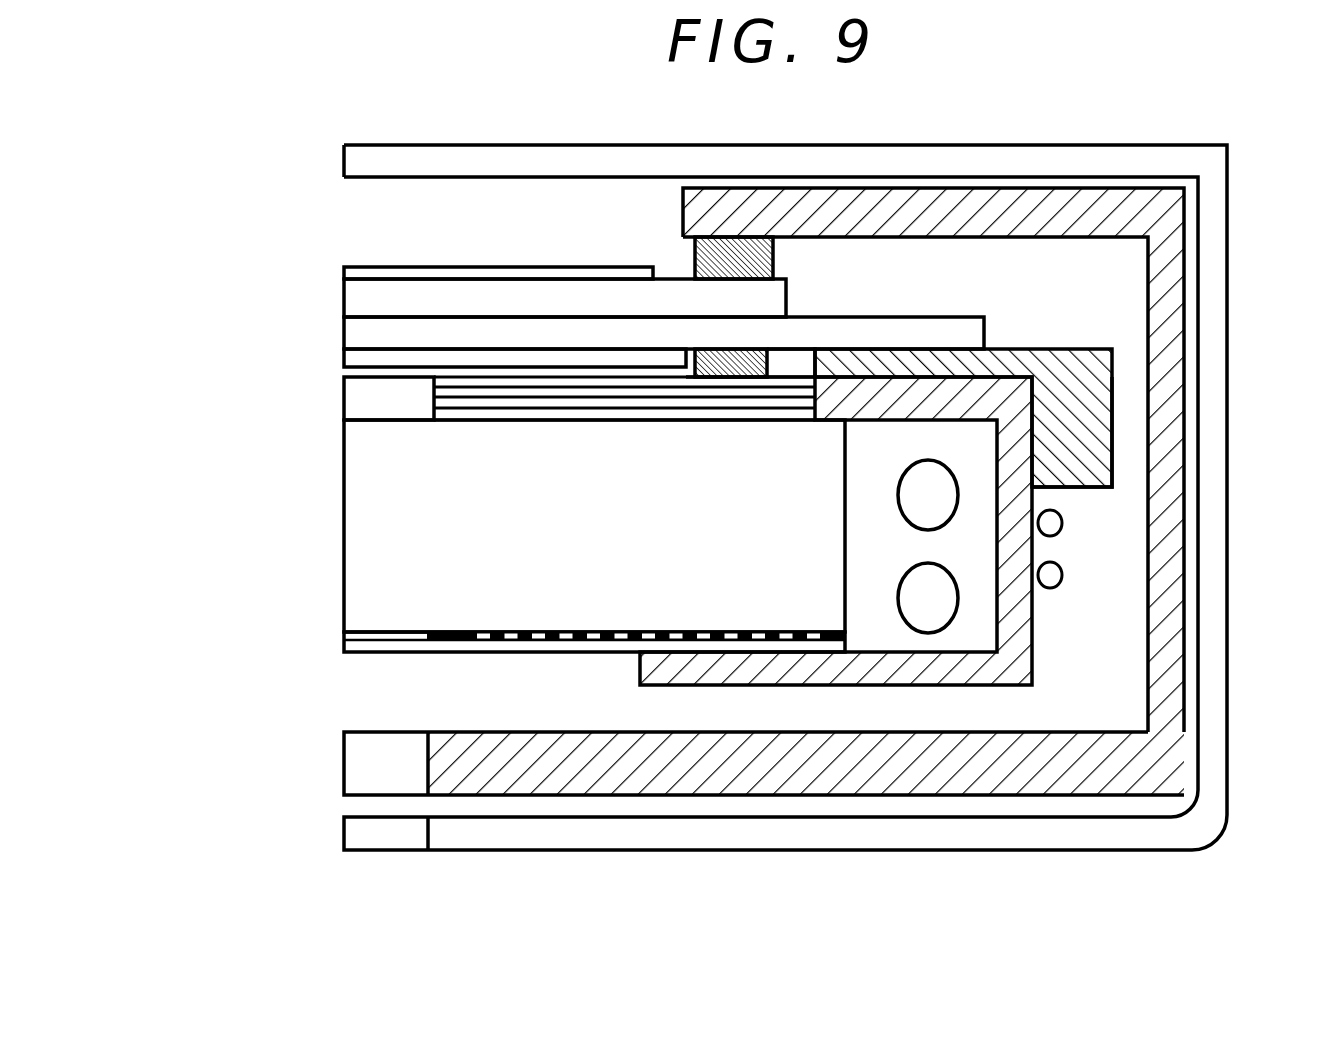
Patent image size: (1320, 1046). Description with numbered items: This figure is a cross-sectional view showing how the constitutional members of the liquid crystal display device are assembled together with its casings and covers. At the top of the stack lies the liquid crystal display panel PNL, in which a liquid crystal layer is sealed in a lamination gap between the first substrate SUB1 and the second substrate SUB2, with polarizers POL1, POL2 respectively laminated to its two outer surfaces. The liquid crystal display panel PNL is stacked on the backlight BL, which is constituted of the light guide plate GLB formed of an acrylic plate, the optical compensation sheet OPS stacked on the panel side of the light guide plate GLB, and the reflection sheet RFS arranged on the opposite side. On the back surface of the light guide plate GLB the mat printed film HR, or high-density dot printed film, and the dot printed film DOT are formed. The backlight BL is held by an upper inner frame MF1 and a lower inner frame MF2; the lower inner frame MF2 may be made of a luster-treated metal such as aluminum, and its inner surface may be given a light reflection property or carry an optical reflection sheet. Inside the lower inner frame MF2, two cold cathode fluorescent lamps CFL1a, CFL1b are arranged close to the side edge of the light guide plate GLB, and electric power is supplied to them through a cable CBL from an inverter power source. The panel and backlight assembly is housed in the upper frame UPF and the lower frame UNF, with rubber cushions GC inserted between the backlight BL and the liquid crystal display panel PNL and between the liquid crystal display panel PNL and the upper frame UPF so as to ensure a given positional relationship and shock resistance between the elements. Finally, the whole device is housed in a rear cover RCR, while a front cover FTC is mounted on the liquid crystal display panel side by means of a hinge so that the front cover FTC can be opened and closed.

The front cover FTC is at (914, 155).
The rear cover RCR is at (525, 849).
The upper frame UPF is at (807, 198).
The lower frame UNF is at (760, 778).
The liquid crystal display panel PNL is at (573, 309).
The polarizer POL2 is at (352, 274).
The second substrate SUB2 is at (352, 303).
The first substrate SUB1 is at (352, 337).
The polarizer POL1 is at (464, 359).
The rubber cushion GC is at (773, 258).
The lower inner frame MF2 is at (1005, 376).
The upper inner frame MF1 is at (1078, 360).
The backlight BL is at (603, 545).
The optical compensation sheet OPS is at (344, 398).
The light guide plate GLB is at (621, 553).
The reflection sheet RFS is at (374, 652).
The mat printed film HR is at (451, 641).
The dot printed film DOT is at (500, 643).
The cold cathode fluorescent lamp CFL1a is at (898, 484).
The cold cathode fluorescent lamp CFL1b is at (897, 598).
The cable CBL is at (1065, 520).